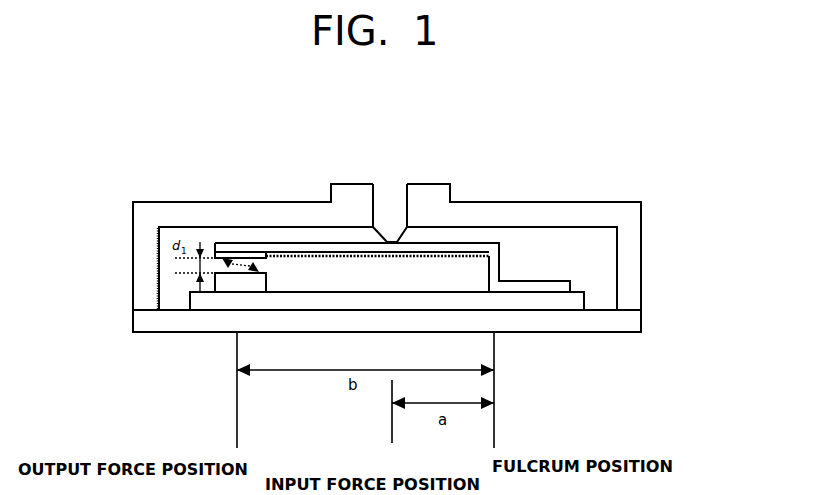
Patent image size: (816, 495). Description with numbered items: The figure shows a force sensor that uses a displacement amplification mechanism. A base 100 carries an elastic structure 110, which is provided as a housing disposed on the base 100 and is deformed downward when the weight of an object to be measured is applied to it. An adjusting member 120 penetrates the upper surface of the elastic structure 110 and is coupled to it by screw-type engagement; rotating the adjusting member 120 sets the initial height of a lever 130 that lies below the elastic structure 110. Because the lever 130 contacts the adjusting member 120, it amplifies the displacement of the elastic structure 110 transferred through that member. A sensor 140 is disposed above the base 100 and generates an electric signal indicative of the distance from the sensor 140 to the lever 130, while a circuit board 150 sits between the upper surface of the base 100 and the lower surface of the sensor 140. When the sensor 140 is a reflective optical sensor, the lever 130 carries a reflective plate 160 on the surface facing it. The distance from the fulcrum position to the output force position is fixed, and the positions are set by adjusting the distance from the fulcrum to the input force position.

The base 100 is at (617, 324).
The elastic structure 110 is at (533, 216).
The adjusting member 120 is at (383, 205).
The lever 130 is at (445, 247).
The sensor 140 is at (218, 285).
The circuit board 150 is at (217, 302).
The reflective plate 160 is at (252, 251).